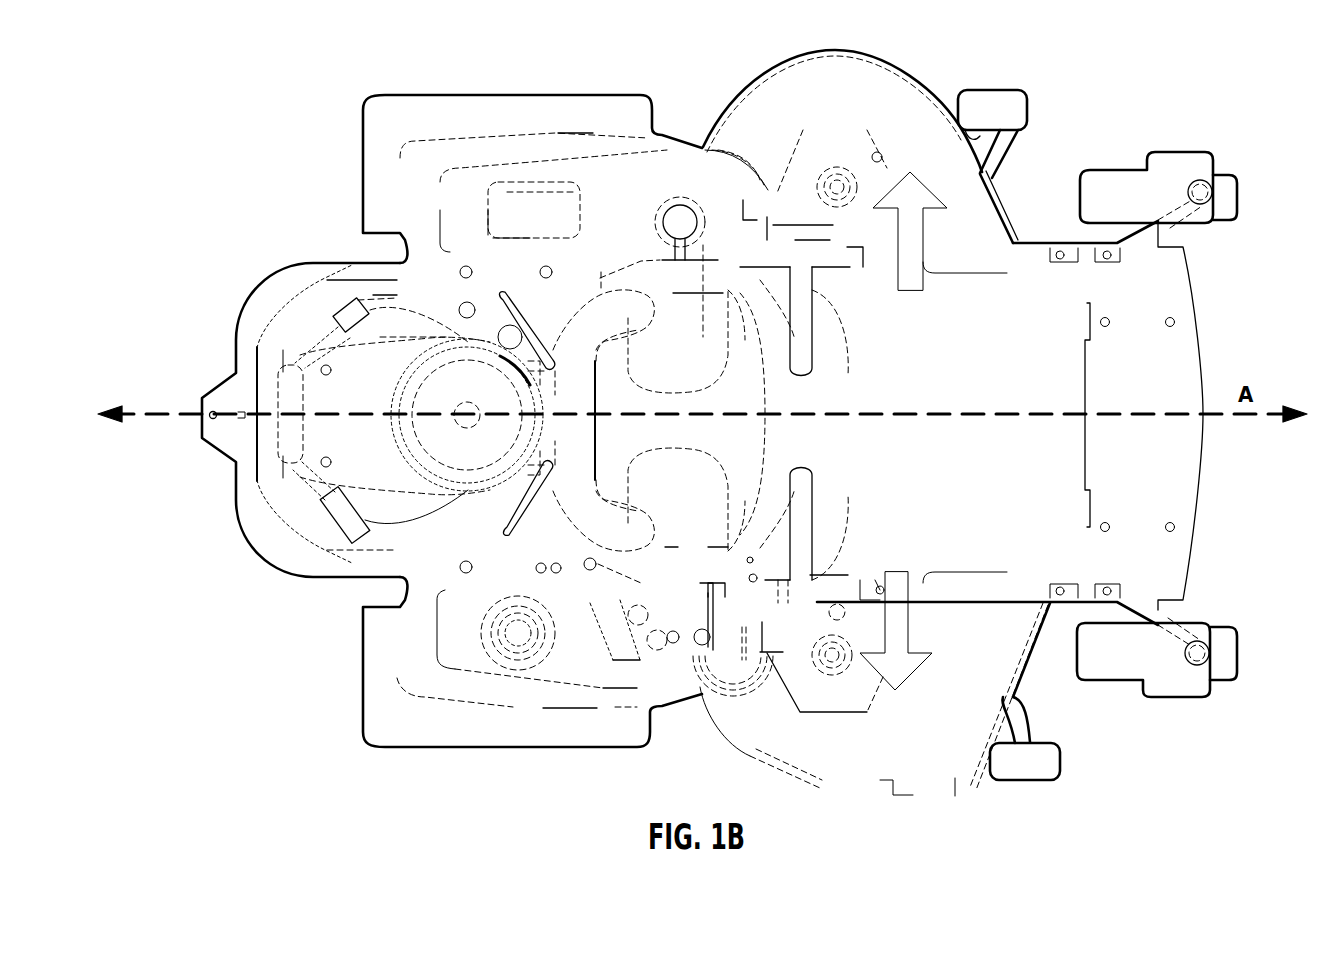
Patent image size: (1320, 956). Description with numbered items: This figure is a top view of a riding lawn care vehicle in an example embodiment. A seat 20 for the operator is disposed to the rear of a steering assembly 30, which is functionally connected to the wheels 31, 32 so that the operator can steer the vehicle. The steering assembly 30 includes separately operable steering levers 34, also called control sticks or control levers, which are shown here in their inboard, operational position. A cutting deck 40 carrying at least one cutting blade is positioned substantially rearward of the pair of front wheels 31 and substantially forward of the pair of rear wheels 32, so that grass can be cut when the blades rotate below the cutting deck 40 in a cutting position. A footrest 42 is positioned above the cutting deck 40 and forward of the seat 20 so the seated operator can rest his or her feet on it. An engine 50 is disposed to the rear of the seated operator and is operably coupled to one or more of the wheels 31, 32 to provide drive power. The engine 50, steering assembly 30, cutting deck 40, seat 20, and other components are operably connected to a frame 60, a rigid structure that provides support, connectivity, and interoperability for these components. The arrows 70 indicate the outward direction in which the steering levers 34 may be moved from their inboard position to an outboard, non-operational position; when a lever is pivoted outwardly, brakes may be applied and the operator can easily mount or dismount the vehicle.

The seat 20 is at (680, 185).
The steering assembly 30 is at (866, 468).
The front wheels 31 is at (1222, 153).
The rear wheels 32 is at (432, 105).
The steering levers 34 is at (843, 460).
The cutting deck 40 is at (893, 70).
The footrest 42 is at (995, 298).
The engine 50 is at (226, 268).
The frame 60 is at (1068, 608).
The arrows 70 is at (908, 195).